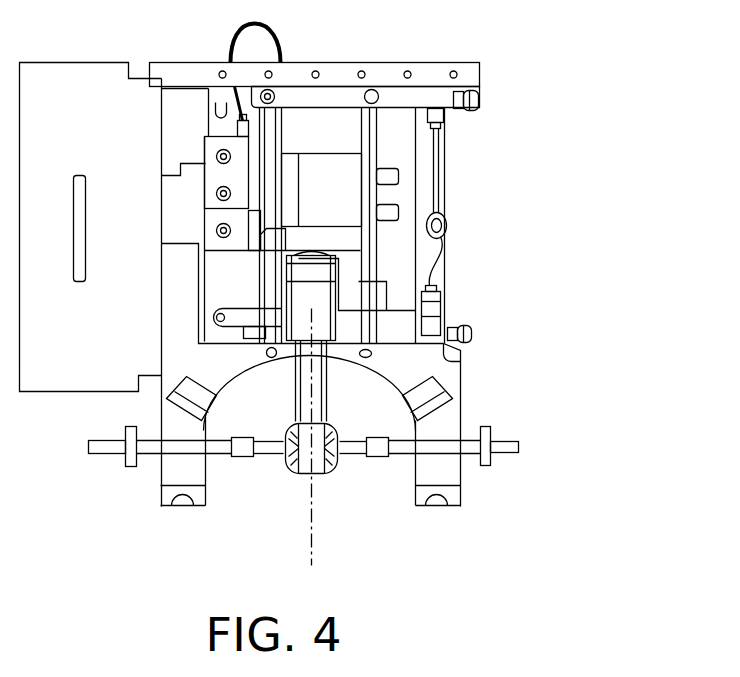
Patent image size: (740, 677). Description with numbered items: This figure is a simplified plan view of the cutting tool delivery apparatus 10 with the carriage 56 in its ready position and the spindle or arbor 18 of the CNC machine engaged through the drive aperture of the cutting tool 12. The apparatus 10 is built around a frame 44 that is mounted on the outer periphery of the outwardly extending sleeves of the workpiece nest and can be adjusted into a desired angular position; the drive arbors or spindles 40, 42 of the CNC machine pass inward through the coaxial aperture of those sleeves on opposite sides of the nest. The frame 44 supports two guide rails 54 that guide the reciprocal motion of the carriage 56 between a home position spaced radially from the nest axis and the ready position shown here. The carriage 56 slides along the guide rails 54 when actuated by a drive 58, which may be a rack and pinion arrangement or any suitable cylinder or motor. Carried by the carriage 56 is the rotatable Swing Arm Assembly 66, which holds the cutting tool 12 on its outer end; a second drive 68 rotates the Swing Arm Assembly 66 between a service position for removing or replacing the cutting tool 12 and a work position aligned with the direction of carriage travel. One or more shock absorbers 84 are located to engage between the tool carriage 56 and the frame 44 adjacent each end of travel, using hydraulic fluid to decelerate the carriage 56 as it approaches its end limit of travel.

The cutting tool delivery apparatus 10 is at (563, 45).
The cutting tool 12 is at (306, 476).
The drive/support spindle or arbor 18 is at (534, 432).
The drive arbor or spindle 40 is at (144, 458).
The drive arbor or spindle 42 is at (476, 458).
The frame 44 is at (479, 383).
The guide rail 54 is at (269, 133).
The carriage 56 is at (404, 285).
The drive 58 is at (347, 170).
The Swing Arm Assembly 66 is at (296, 403).
The second drive 68 is at (447, 313).
The shock absorber 84 is at (216, 114).